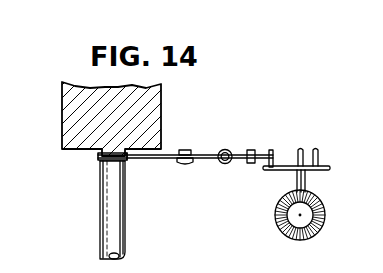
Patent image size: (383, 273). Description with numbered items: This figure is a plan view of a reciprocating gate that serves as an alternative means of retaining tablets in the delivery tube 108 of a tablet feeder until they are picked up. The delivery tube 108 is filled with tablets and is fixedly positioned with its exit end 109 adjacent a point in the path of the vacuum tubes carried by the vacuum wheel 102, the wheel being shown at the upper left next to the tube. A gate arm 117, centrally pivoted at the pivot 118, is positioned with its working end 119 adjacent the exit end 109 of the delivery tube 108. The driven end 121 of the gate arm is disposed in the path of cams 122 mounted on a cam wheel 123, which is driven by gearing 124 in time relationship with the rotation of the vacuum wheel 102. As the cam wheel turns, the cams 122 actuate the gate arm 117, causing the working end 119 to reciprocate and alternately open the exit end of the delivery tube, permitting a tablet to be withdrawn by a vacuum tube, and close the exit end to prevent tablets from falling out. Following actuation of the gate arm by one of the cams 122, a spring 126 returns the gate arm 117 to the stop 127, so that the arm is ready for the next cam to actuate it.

The vacuum wheel 102 is at (153, 119).
The delivery tube 108 is at (107, 217).
The exit end 109 is at (110, 164).
The gate arm 117 is at (140, 159).
The pivot 118 is at (185, 149).
The working end 119 is at (128, 160).
The driven end 121 is at (270, 150).
The cams 122 is at (278, 160).
The cam wheel 123 is at (328, 170).
The gearing 124 is at (362, 211).
The spring 126 is at (226, 164).
The stop 127 is at (250, 164).